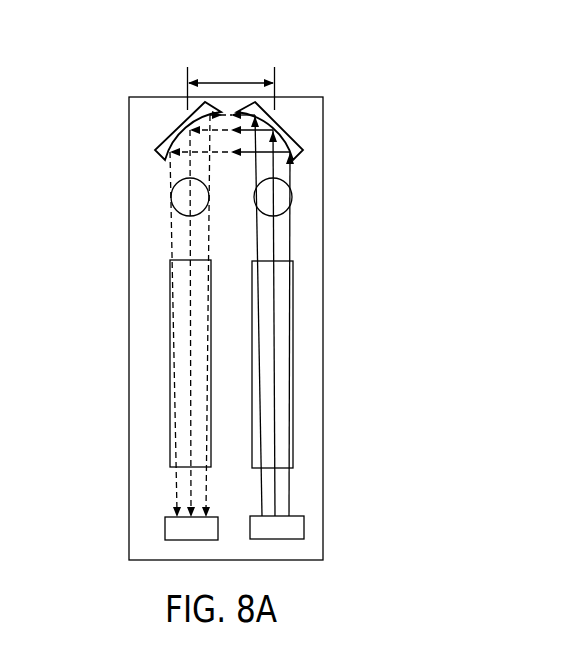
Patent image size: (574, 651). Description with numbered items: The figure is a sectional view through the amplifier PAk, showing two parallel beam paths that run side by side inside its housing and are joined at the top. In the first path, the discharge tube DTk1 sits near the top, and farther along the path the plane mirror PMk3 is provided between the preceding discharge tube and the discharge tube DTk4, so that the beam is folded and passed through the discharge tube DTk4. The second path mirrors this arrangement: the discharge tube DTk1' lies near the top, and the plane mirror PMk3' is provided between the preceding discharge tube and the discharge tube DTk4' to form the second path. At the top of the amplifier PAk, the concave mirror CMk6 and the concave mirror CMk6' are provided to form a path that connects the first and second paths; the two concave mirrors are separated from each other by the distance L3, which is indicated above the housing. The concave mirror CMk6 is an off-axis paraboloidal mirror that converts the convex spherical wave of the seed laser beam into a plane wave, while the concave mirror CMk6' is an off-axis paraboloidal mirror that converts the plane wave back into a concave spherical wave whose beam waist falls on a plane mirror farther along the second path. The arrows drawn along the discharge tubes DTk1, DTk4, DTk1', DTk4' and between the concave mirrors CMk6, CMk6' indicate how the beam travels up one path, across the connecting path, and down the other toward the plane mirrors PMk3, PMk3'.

The amplifier PAk is at (303, 76).
The distance L3 is at (231, 78).
The concave mirror CMk6' is at (137, 121).
The concave mirror CMk6 is at (320, 123).
The discharge tube DTk1' is at (130, 178).
The discharge tube DTk1 is at (321, 181).
The discharge tube DTk4' is at (131, 363).
The discharge tube DTk4 is at (327, 364).
The plane mirror PMk3' is at (138, 501).
The plane mirror PMk3 is at (329, 506).